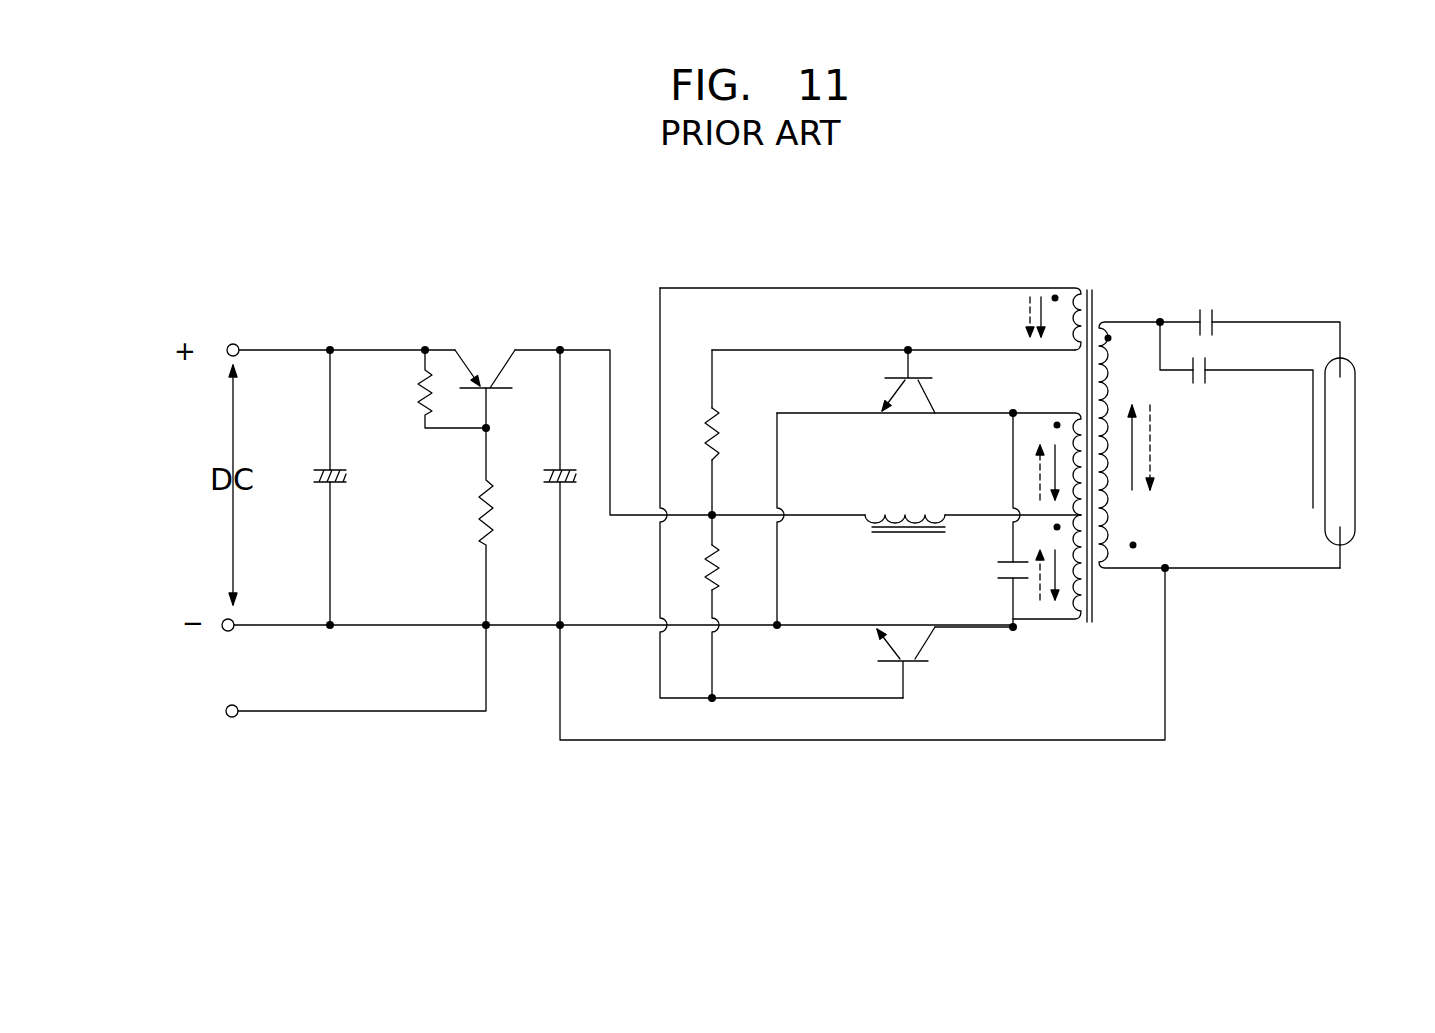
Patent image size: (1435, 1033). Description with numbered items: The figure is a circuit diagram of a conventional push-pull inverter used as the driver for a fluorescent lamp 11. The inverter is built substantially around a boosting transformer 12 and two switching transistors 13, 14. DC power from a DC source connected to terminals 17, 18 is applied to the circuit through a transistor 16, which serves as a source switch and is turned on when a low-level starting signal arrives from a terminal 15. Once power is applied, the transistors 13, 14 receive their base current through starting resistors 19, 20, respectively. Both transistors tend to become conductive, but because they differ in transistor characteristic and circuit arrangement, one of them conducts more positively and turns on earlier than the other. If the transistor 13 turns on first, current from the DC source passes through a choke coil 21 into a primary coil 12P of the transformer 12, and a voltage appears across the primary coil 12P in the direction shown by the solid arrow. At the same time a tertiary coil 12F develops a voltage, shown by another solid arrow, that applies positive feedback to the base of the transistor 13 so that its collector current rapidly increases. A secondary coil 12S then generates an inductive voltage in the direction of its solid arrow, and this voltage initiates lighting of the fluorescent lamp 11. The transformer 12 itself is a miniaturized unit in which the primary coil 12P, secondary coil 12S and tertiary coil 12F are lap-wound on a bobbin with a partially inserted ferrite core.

The fluorescent lamp 11 is at (1352, 440).
The boosting transformer 12 is at (1000, 454).
The tertiary coil 12F is at (1078, 290).
The primary coil 12P is at (1055, 630).
The secondary coil 12S is at (1125, 508).
The switching transistor 13 is at (920, 395).
The switching transistor 14 is at (908, 640).
The terminal 15 is at (240, 717).
The transistor 16 is at (483, 351).
The terminal 17 is at (232, 343).
The terminal 18 is at (224, 631).
The starting resistor 19 is at (718, 447).
The starting resistor 20 is at (720, 582).
The choke coil 21 is at (918, 512).